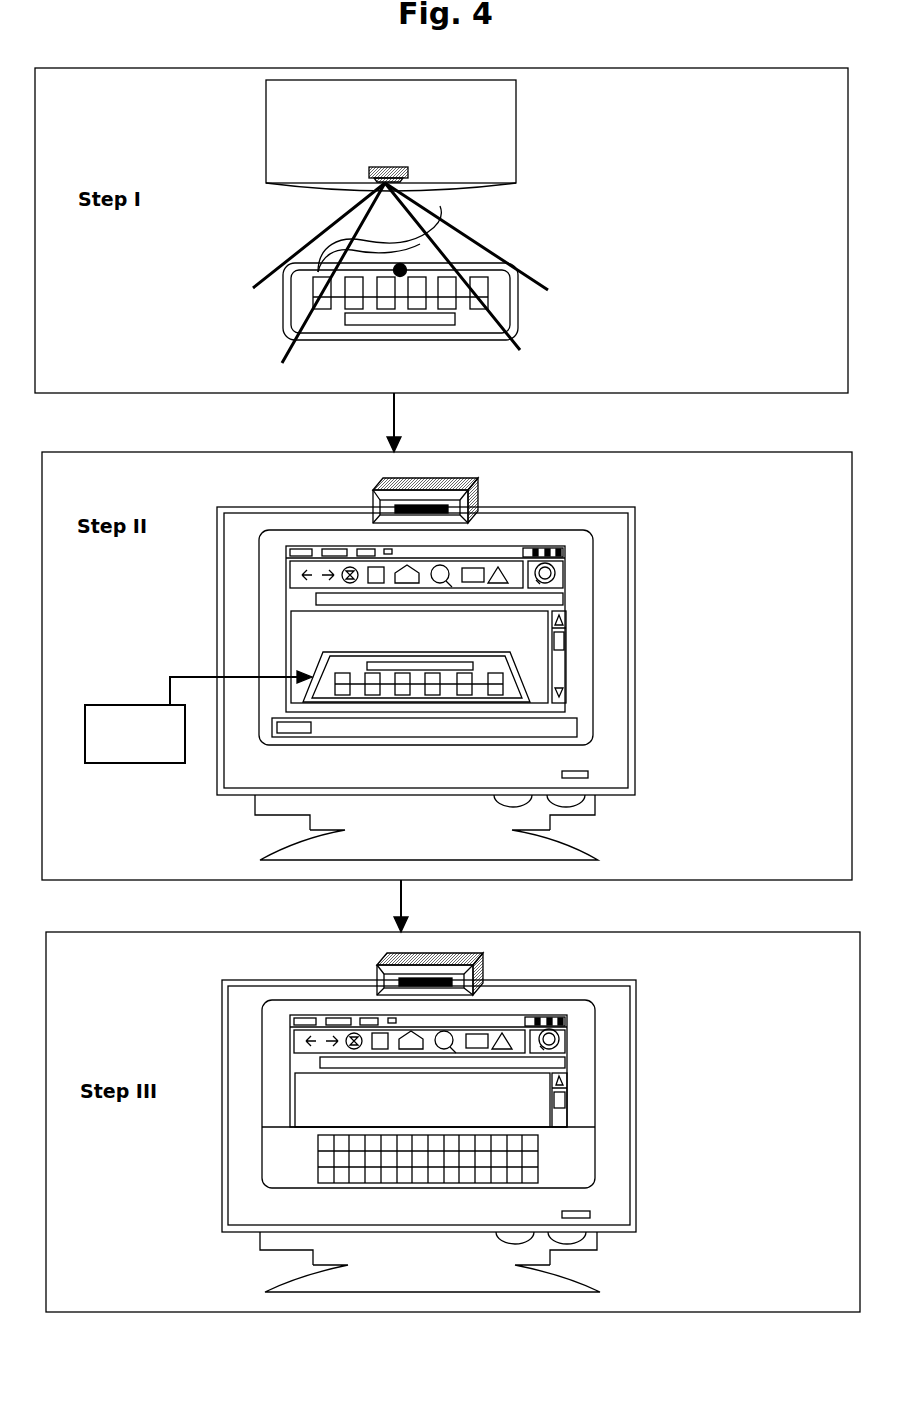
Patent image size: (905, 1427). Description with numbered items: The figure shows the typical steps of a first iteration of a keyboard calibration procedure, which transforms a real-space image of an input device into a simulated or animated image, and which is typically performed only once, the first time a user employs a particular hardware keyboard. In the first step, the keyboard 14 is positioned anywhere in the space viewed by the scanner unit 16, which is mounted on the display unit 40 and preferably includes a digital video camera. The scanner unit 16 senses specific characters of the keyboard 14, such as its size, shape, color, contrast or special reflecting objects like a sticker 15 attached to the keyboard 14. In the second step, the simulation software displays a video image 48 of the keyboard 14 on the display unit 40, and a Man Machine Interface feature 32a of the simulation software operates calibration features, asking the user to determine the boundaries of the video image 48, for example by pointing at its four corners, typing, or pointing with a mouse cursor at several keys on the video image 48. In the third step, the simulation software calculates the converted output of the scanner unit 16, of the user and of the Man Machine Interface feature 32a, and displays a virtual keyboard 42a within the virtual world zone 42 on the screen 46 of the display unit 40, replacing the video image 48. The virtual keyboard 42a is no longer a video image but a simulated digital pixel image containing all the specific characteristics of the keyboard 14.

The display unit 40 is at (516, 122).
The scanner unit 16 is at (410, 172).
The sticker 15 is at (404, 266).
The keyboard 14 is at (518, 315).
The screen 46 is at (429, 637).
The video image 48 is at (520, 673).
The Man Machine Interface feature 32a is at (198, 717).
The virtual world zone 42 is at (439, 1155).
The virtual keyboard 42a is at (525, 1160).